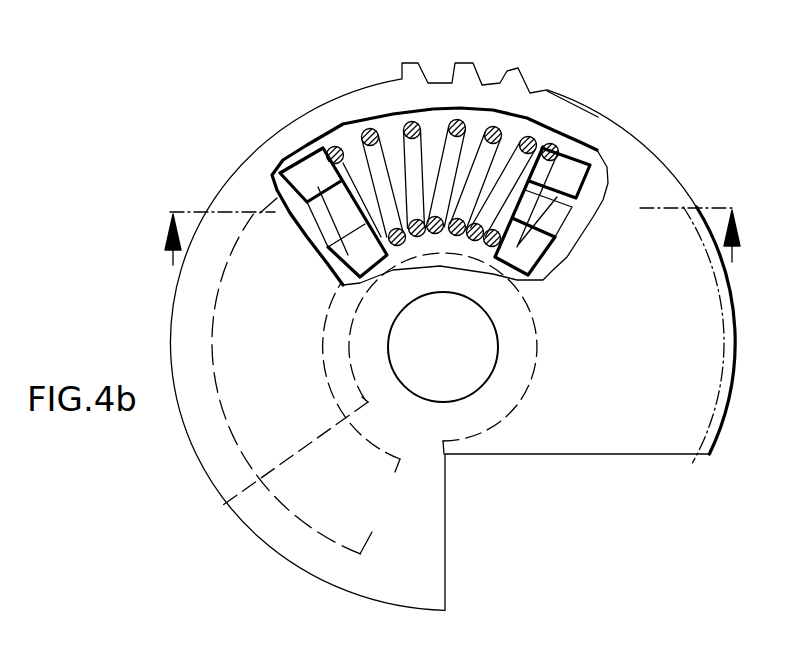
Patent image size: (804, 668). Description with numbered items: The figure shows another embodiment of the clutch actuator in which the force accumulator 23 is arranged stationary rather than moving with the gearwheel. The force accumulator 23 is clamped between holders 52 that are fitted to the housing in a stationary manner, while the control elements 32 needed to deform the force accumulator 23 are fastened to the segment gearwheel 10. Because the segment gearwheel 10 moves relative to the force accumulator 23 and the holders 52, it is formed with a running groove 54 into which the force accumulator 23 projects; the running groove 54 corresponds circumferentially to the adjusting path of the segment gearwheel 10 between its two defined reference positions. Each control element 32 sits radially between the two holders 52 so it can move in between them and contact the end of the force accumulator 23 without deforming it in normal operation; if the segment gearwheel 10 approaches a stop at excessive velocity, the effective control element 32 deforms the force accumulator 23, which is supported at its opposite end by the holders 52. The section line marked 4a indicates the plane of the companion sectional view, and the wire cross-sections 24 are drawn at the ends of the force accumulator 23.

The segment gearwheel 10 is at (635, 437).
The force accumulator 23 is at (420, 127).
The coil wire ends 24 is at (497, 123).
The control element 32 is at (555, 211).
The holder 52 is at (305, 168).
The running groove 54 is at (233, 310).
The section line indicator 4a is at (452, 240).